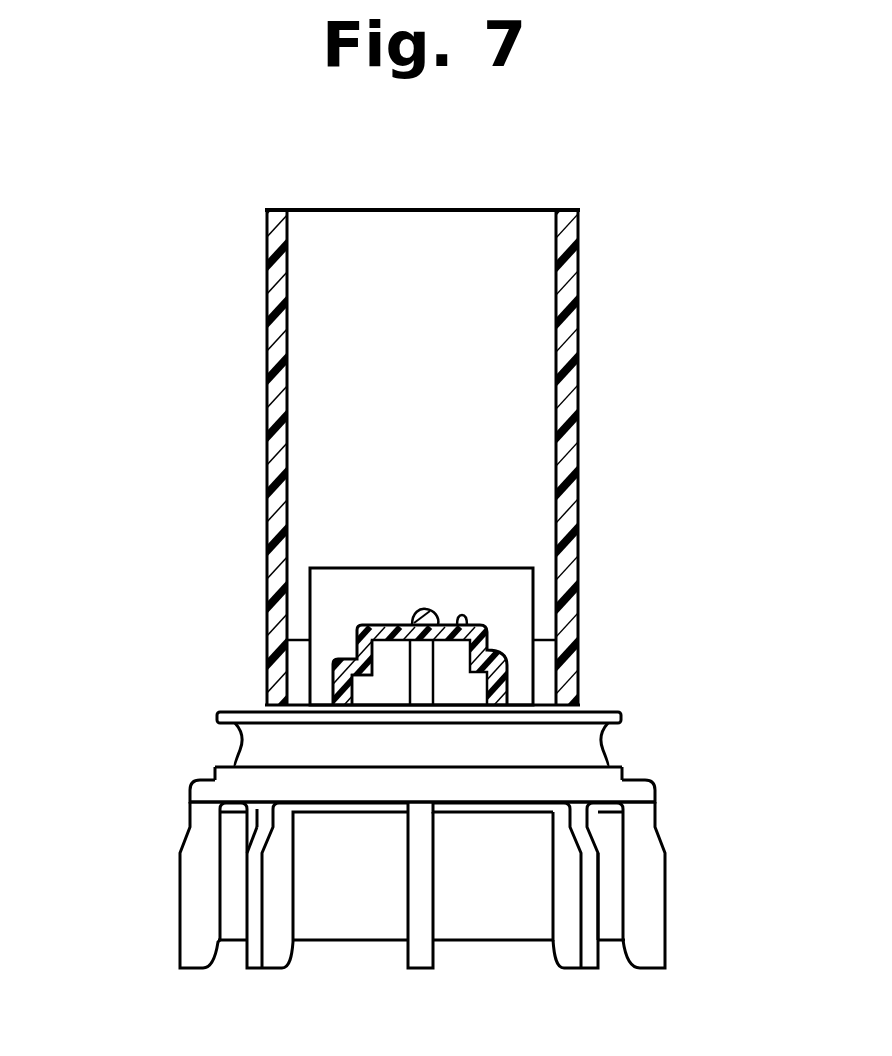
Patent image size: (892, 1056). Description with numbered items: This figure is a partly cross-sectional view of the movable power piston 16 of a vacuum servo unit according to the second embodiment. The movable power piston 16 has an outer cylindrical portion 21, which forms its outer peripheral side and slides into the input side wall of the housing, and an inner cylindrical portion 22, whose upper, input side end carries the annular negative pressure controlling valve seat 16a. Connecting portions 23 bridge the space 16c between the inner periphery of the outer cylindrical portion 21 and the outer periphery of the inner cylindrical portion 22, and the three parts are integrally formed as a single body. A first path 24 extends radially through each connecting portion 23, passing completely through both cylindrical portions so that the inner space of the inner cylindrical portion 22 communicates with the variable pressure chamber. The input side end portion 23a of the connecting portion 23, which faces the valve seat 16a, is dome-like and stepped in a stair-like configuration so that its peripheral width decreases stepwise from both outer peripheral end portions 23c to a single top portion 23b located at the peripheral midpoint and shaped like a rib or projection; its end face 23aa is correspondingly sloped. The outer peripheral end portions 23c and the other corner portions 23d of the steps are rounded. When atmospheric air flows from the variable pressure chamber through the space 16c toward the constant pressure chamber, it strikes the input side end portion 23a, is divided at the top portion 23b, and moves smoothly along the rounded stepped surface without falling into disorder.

The outer cylindrical portion 21 is at (583, 331).
The inner cylindrical portion 22 is at (322, 588).
The movable power piston 16 is at (640, 718).
The negative pressure controlling valve seat 16a is at (418, 567).
The space 16c is at (300, 593).
The connecting portion 23 is at (500, 680).
The input side end portion 23a is at (398, 600).
The end face 23aa is at (458, 623).
The top portion 23b is at (430, 611).
The outer peripheral end portion 23c is at (335, 662).
The corner portion 23d is at (400, 617).
The first path 24 is at (382, 690).